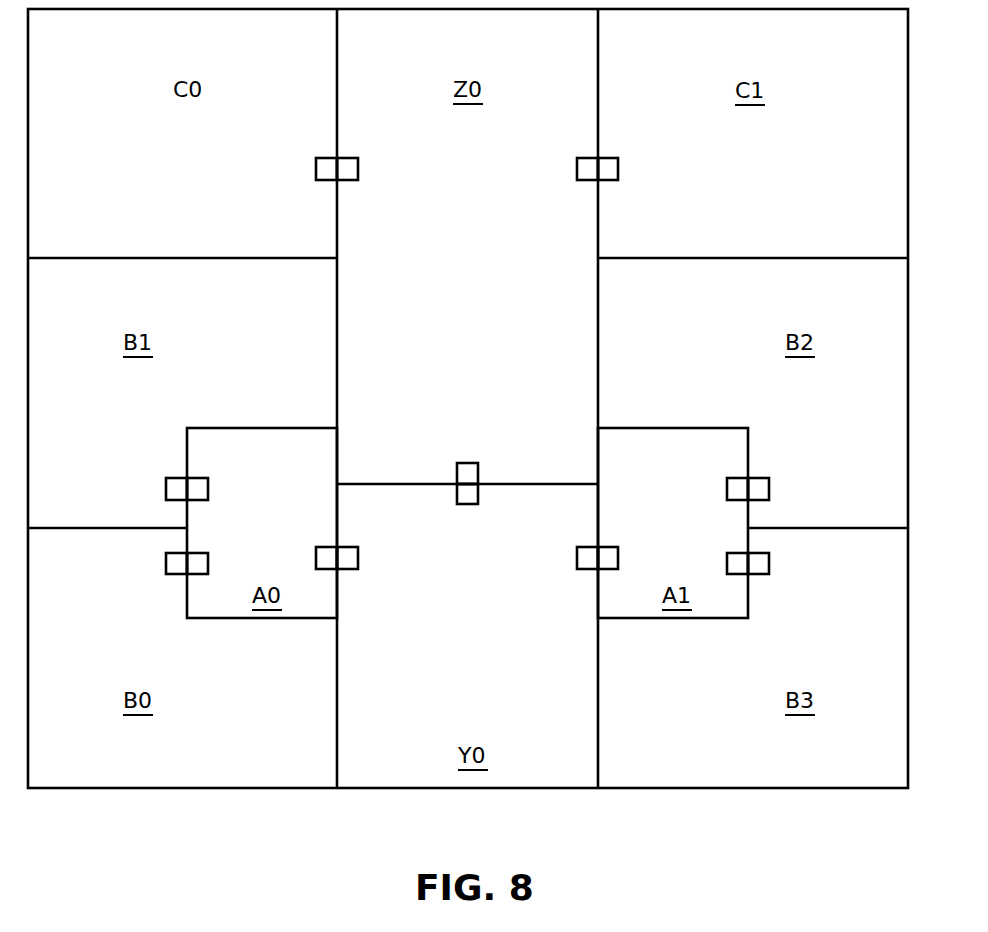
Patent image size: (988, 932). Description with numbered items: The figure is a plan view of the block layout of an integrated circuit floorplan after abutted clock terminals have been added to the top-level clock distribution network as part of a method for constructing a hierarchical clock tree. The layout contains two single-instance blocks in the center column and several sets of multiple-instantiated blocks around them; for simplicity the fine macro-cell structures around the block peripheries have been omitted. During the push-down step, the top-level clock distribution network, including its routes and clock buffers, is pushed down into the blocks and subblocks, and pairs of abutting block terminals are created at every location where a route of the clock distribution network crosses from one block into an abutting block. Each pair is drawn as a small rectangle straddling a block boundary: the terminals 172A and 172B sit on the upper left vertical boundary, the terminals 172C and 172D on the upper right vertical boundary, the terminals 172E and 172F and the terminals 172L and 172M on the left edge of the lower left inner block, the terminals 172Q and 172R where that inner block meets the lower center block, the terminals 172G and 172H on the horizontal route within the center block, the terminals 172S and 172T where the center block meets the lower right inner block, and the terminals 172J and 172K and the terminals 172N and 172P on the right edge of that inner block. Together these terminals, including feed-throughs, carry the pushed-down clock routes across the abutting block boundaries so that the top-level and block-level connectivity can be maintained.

The abutting block terminal 172A is at (311, 163).
The abutting block terminal 172B is at (362, 182).
The abutting block terminal 172C is at (574, 182).
The abutting block terminal 172D is at (623, 163).
The abutting block terminal 172E is at (161, 483).
The abutting block terminal 172F is at (212, 483).
The abutting block terminal 172G is at (468, 460).
The abutting block terminal 172H is at (468, 507).
The abutting block terminal 172J is at (722, 483).
The abutting block terminal 172K is at (773, 483).
The abutting block terminal 172L is at (161, 563).
The abutting block terminal 172M is at (214, 552).
The abutting block terminal 172N is at (718, 552).
The abutting block terminal 172P is at (773, 563).
The abutting block terminal 172Q is at (322, 573).
The abutting block terminal 172R is at (362, 572).
The abutting block terminal 172S is at (573, 572).
The abutting block terminal 172T is at (615, 573).